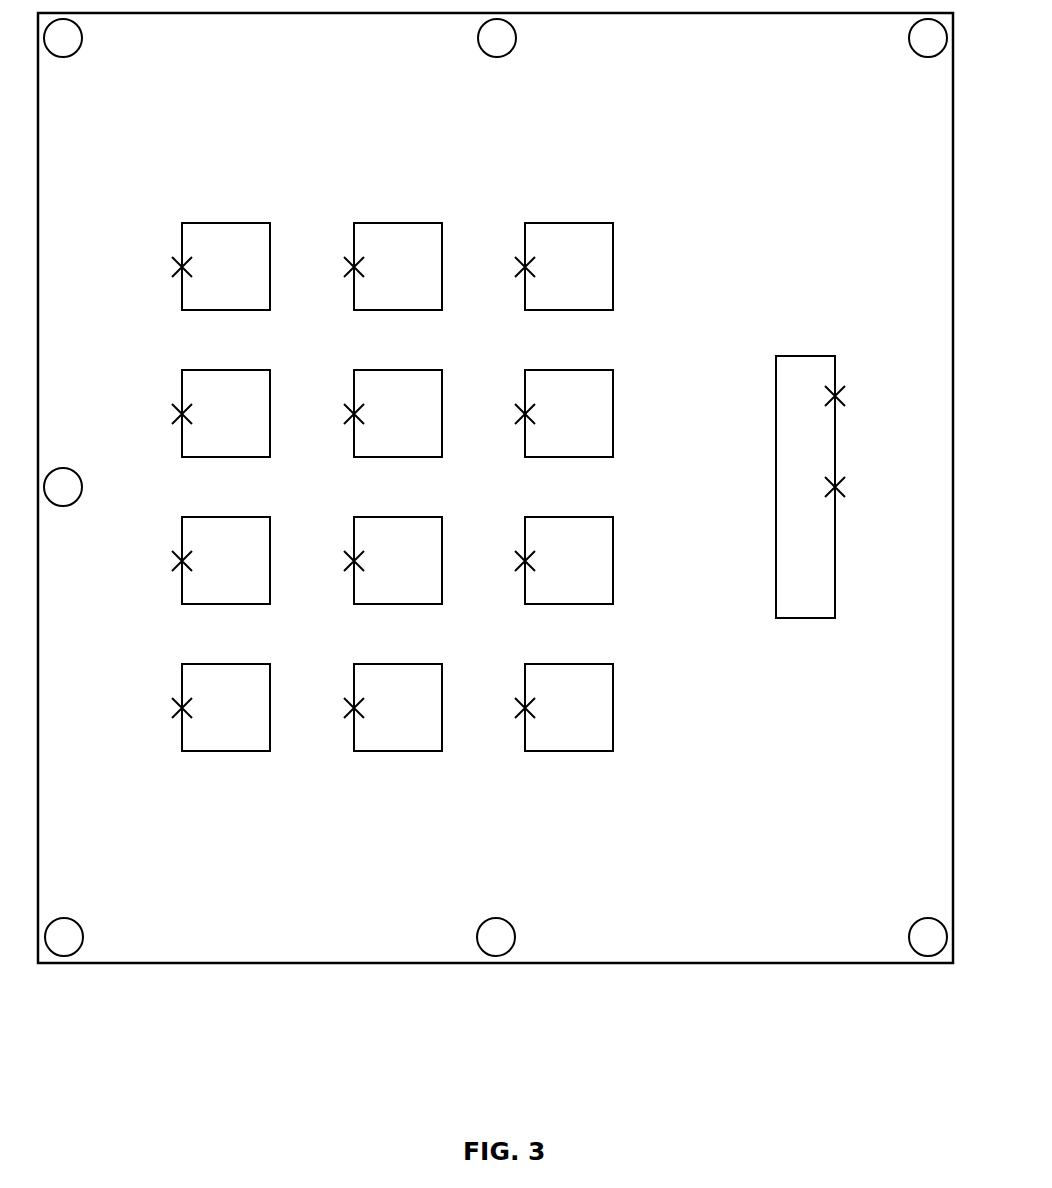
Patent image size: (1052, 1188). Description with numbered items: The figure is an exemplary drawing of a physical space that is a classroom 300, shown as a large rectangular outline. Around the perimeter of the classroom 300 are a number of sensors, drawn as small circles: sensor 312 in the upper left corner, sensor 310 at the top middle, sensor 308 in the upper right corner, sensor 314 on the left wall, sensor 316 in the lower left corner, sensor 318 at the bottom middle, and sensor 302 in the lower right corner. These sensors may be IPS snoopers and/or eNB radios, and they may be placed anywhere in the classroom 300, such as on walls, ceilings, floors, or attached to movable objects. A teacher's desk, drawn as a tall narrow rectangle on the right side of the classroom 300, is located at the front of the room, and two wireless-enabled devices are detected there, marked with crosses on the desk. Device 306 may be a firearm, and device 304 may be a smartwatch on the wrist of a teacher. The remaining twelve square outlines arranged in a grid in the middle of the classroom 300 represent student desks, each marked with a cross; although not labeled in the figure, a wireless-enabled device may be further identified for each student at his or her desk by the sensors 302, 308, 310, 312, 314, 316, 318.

The classroom 300 is at (721, 135).
The sensor 302 is at (914, 928).
The device 304 is at (840, 492).
The device 306 is at (848, 393).
The sensor 308 is at (913, 56).
The sensor 310 is at (490, 53).
The sensor 312 is at (80, 50).
The sensor 314 is at (82, 503).
The sensor 316 is at (71, 919).
The sensor 318 is at (514, 922).